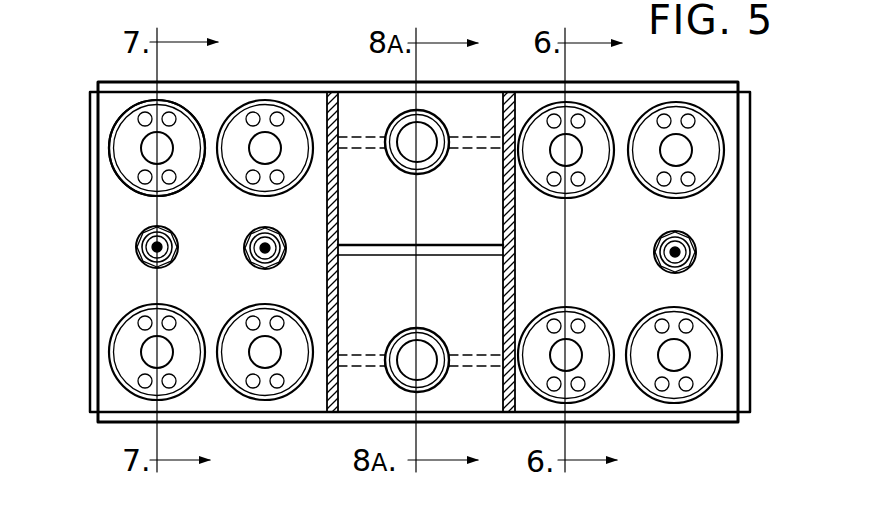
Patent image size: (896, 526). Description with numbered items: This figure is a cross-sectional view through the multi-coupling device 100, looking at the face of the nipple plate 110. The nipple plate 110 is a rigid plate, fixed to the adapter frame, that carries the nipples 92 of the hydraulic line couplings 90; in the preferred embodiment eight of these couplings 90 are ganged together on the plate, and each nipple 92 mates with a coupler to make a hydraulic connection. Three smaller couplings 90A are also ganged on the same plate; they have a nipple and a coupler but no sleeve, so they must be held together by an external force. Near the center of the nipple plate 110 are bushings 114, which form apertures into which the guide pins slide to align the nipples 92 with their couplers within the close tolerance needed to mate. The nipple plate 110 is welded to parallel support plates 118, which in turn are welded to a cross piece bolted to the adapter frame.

The multi-coupling device 100 is at (656, 74).
The nipple plate 110 is at (712, 210).
The parallel support plates 118 is at (338, 200).
The bushings 114 is at (433, 116).
The nipple 92 is at (127, 140).
The smaller couplings 90A is at (133, 248).
The hydraulic line couplings 90 is at (124, 186).